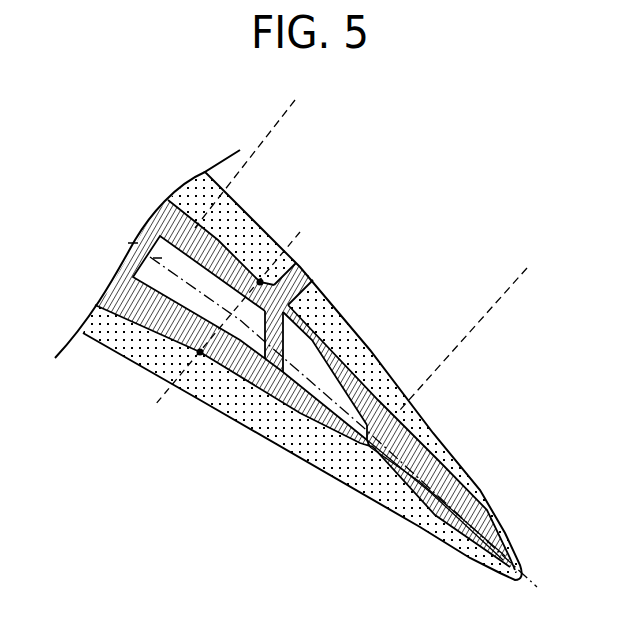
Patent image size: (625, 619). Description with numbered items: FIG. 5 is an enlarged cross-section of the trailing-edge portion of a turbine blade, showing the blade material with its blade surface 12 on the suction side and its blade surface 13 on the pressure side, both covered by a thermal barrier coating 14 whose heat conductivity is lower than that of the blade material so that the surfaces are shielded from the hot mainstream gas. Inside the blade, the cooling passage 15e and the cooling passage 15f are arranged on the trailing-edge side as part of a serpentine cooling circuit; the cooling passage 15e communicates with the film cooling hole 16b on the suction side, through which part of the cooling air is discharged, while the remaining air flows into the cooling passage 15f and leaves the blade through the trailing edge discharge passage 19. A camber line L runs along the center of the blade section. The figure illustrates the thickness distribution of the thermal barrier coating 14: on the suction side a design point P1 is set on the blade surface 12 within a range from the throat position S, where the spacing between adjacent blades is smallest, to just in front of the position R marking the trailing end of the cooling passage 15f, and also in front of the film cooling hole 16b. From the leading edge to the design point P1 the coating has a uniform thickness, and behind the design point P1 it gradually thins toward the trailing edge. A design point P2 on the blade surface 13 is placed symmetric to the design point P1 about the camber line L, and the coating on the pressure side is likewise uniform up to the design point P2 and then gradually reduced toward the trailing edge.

The blade surface on suction side 12 is at (433, 433).
The blade surface on pressure side 13 is at (363, 463).
The thermal barrier coating 14 is at (355, 333).
The cooling passage 15e is at (187, 306).
The cooling passage 15f is at (305, 425).
The film cooling hole 16b is at (307, 276).
The trailing edge discharge passage 19 is at (435, 517).
The camber line L is at (160, 257).
The throat position S is at (272, 132).
The position of tailing end of final cooling passage R is at (497, 307).
The design point on suction side P1 is at (260, 282).
The design point on pressure side P2 is at (200, 352).